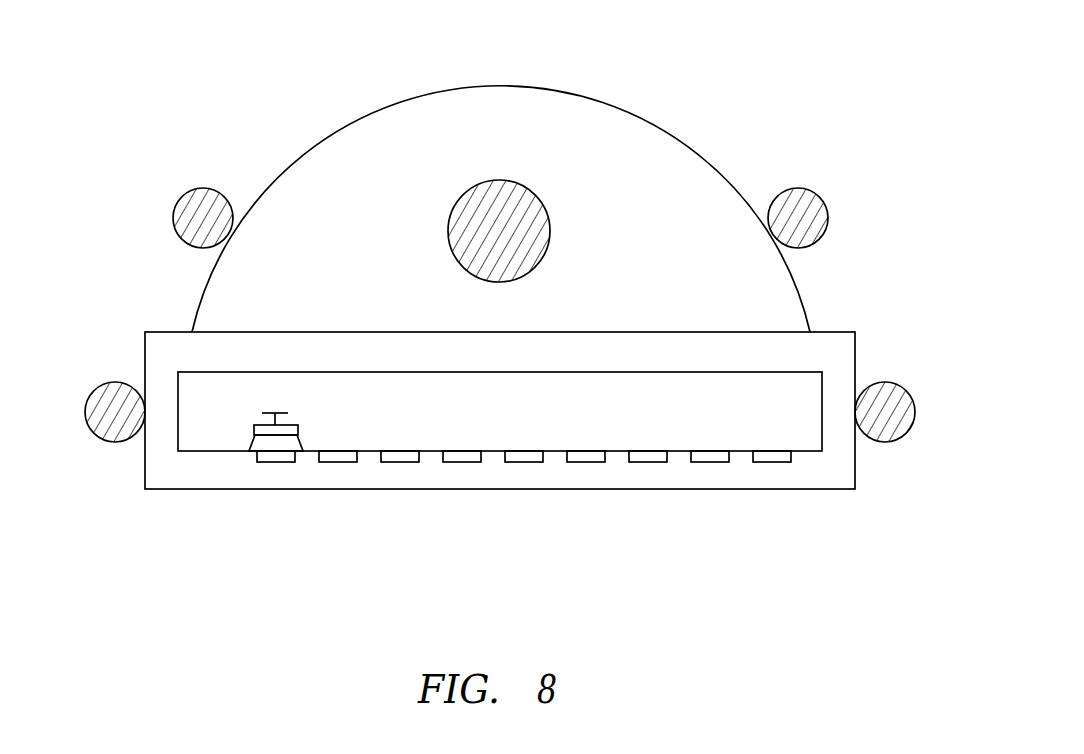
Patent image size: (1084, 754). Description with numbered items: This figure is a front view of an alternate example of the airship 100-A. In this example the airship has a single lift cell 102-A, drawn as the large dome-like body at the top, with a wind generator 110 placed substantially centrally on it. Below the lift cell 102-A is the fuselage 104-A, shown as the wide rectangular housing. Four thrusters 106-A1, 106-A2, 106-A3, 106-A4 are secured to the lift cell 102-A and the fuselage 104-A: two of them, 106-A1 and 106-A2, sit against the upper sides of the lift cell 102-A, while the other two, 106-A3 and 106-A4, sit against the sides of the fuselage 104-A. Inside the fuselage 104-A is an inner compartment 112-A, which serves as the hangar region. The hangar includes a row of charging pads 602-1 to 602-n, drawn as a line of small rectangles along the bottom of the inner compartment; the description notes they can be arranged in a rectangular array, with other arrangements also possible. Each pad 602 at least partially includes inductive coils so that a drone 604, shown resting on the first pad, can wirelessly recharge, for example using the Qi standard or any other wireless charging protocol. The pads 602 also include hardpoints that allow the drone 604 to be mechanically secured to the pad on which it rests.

The airship 100-A is at (830, 33).
The lift cell 102-A is at (673, 155).
The fuselage 104-A is at (872, 517).
The thruster 106-A1 is at (803, 188).
The thruster 106-A2 is at (197, 188).
The thruster 106-A3 is at (893, 380).
The thruster 106-A4 is at (115, 380).
The wind generator 110 is at (521, 243).
The circuit board 112-A is at (500, 411).
The pad 602 is at (795, 470).
The charging pad 602-1 is at (276, 456).
The charging pad 602-n is at (772, 456).
The drone 604 is at (250, 428).